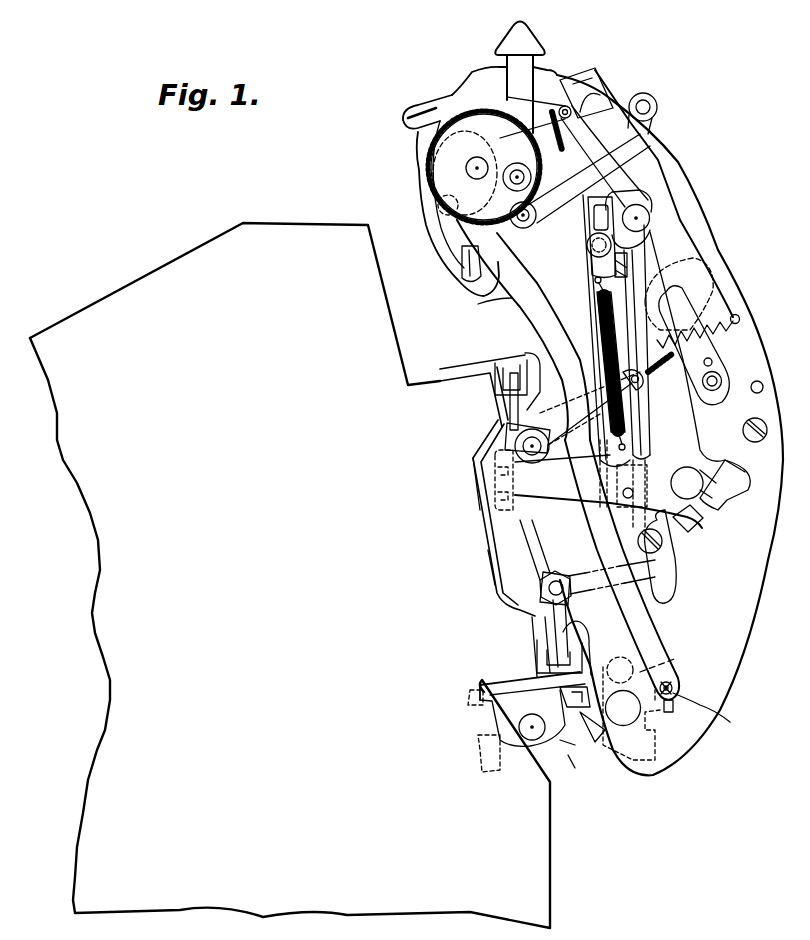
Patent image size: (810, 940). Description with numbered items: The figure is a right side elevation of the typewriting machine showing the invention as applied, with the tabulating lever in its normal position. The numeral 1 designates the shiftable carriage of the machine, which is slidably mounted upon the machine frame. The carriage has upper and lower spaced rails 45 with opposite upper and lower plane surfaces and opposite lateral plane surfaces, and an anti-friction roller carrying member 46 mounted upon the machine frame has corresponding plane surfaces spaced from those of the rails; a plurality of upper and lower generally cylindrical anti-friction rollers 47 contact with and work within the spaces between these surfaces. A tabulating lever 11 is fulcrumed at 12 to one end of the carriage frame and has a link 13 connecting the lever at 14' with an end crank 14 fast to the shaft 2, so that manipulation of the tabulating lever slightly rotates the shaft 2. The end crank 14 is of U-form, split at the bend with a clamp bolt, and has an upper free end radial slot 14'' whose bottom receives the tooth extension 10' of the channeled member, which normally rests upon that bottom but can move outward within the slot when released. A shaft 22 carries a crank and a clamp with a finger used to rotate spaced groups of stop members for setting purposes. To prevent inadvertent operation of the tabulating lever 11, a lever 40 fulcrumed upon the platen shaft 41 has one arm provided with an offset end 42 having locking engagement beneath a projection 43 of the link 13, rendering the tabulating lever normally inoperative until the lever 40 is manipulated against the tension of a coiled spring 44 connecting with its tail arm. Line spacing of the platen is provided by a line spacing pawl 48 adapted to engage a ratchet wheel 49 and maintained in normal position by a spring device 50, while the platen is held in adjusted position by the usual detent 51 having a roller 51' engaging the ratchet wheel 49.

The shiftable carriage 1 is at (730, 686).
The shaft 2 is at (675, 509).
The tooth end extension 10' is at (672, 658).
The tabulating lever 11 is at (526, 42).
The fulcrum 12 is at (532, 174).
The link 13 is at (553, 268).
The end crank 14 is at (622, 570).
The link connection point 14' is at (713, 711).
The radial slot 14'' is at (666, 665).
The shaft 22 is at (532, 726).
The lever 40 is at (406, 124).
The platen shaft 41 is at (450, 175).
The offset end 42 is at (466, 294).
The projection 43 is at (490, 306).
The coiled spring 44 is at (560, 110).
The rails 45 is at (518, 610).
The anti-friction roller carrying member 46 is at (470, 366).
The anti-friction rollers 47 is at (505, 372).
The line spacing pawl 48 is at (600, 177).
The ratchet wheel 49 is at (440, 192).
The spring device 50 is at (616, 306).
The detent 51 is at (650, 224).
The roller 51' is at (521, 227).